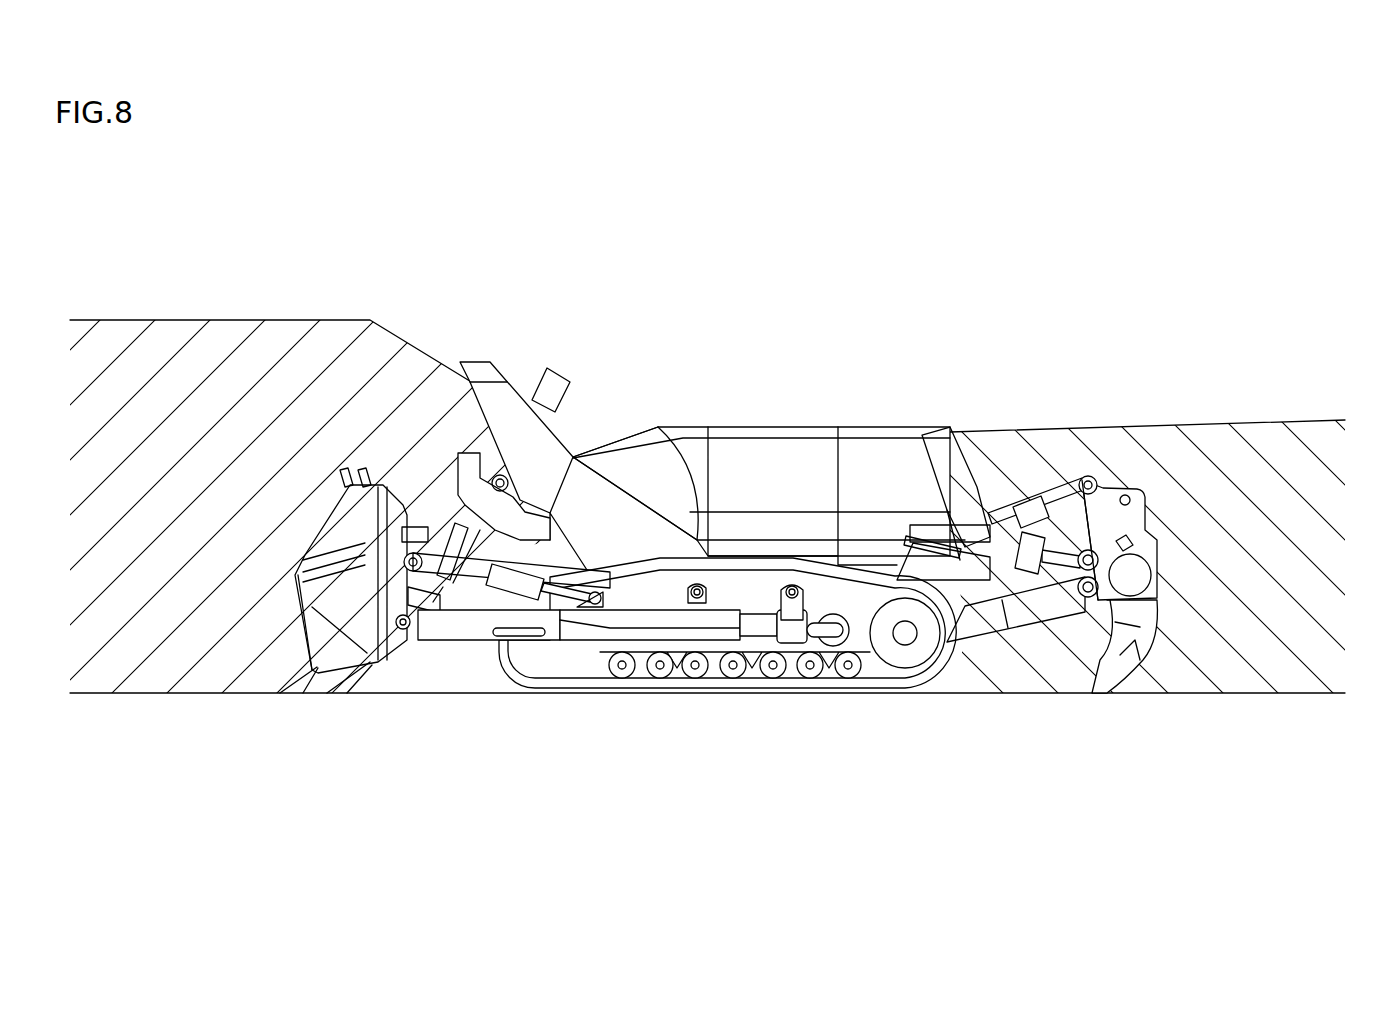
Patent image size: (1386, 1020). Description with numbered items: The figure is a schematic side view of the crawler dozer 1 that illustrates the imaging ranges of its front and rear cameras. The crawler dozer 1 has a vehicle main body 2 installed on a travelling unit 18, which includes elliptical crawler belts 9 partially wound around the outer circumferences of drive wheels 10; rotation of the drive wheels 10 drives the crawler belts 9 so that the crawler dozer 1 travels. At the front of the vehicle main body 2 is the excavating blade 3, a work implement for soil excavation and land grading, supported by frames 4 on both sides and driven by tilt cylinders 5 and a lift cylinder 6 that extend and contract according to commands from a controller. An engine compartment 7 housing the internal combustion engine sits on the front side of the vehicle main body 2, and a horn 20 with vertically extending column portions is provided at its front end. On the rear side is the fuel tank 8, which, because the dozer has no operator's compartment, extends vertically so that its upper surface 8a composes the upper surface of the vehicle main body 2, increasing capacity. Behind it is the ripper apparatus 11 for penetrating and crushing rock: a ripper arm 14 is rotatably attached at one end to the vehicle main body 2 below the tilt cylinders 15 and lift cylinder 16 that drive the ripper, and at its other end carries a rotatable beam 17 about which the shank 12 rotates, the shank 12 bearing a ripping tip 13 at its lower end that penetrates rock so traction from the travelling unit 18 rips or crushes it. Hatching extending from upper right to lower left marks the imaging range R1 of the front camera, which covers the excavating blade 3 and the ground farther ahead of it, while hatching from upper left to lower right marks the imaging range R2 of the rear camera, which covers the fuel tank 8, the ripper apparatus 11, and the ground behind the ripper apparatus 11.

The crawler dozer 1 is at (933, 280).
The vehicle main body 2 is at (791, 465).
The excavating blade 3 is at (345, 525).
The frame 4 is at (480, 627).
The tilt cylinder 5 is at (467, 607).
The lift cylinder 6 is at (553, 400).
The engine compartment 7 is at (686, 465).
The fuel tank 8 is at (965, 480).
The upper surface 8a is at (947, 640).
The crawler belt 9 is at (738, 662).
The drive wheel 10 is at (905, 662).
The ripper apparatus 11 is at (1143, 473).
The shank 12 is at (1140, 578).
The ripping tip 13 is at (1105, 630).
The ripper arm 14 is at (1040, 607).
The tilt cylinder 15 is at (1047, 503).
The lift cylinder 16 is at (1055, 547).
The beam 17 is at (1165, 600).
The travelling unit 18 is at (801, 671).
The horn 20 is at (512, 430).
The imaging range R1 is at (188, 657).
The imaging range R2 is at (1277, 657).